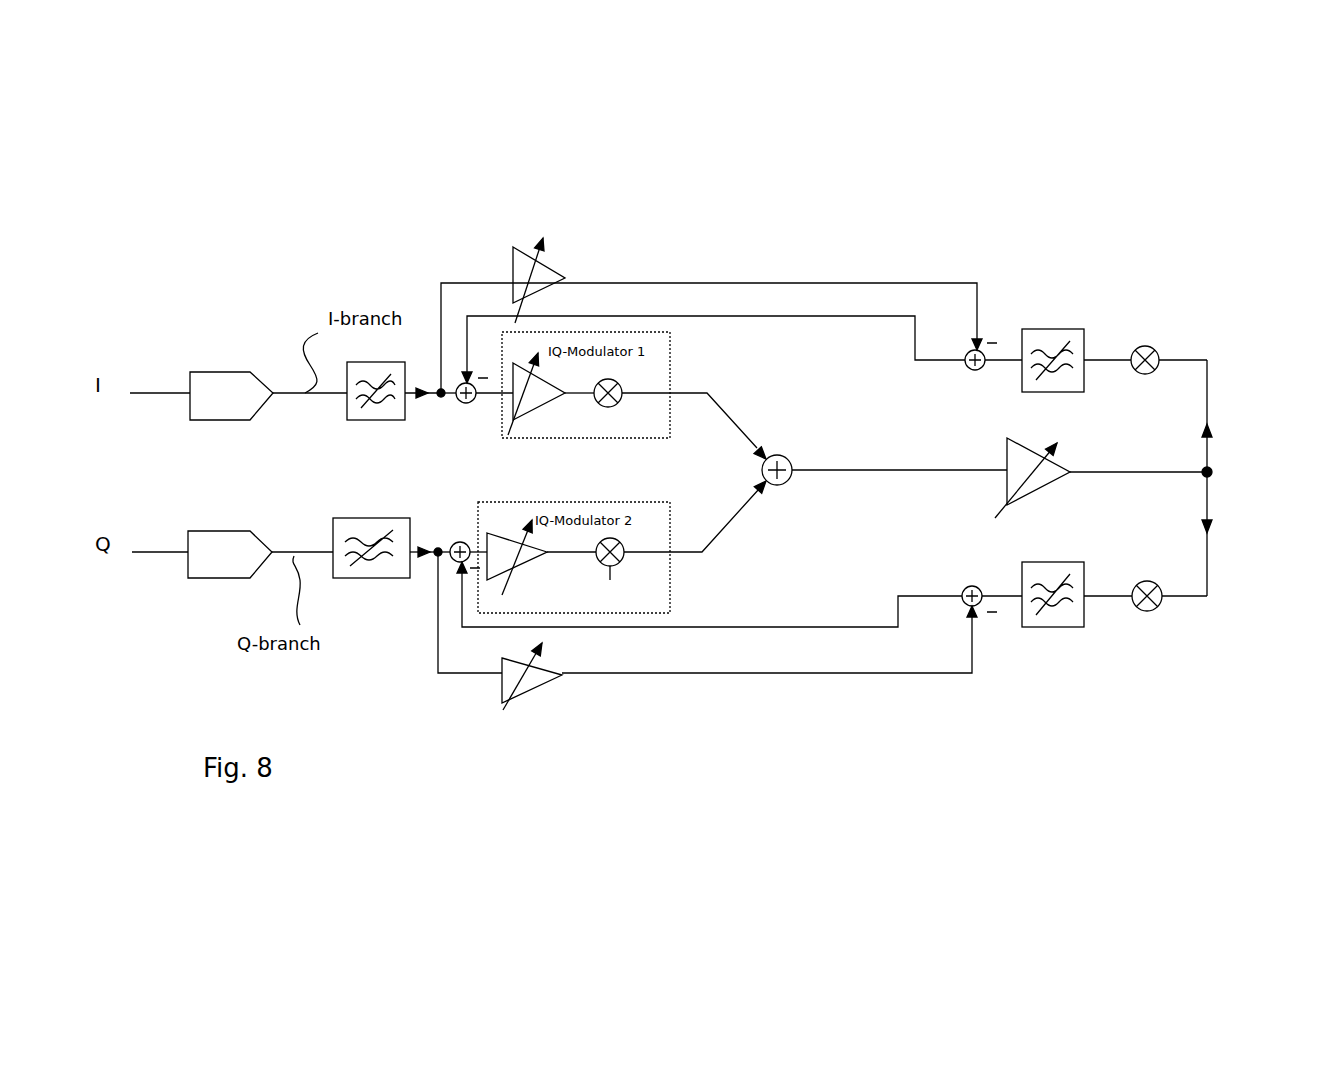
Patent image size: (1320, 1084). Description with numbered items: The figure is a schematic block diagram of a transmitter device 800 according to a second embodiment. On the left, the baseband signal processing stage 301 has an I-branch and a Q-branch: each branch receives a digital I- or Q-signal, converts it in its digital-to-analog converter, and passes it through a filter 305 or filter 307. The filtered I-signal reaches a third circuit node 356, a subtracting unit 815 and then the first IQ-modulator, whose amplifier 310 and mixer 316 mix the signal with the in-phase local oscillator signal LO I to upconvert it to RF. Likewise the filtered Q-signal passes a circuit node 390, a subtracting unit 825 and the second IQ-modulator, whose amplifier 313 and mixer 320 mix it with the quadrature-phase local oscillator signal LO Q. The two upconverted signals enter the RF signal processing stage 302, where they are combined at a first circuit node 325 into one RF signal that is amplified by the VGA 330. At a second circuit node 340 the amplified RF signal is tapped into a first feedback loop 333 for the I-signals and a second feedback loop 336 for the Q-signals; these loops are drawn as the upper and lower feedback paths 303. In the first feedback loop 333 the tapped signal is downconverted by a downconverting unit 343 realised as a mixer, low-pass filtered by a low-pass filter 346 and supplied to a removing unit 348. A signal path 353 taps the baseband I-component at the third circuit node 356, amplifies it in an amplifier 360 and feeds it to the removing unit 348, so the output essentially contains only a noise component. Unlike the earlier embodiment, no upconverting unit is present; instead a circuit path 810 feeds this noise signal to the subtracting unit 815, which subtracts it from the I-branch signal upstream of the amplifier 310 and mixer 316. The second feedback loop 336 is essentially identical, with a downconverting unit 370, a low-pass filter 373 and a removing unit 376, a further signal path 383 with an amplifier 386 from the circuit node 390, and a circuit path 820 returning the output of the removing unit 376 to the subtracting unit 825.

The transmitter device 800 is at (277, 250).
The baseband signal processing stage 301 is at (240, 472).
The filter 305 is at (370, 410).
The filter 307 is at (378, 527).
The subtracting unit 815 is at (442, 400).
The circuit node 390 is at (438, 560).
The third circuit node 356 is at (441, 393).
The subtracting unit 825 is at (438, 548).
The amplifier 310 is at (553, 395).
The amplifier 313 is at (530, 553).
The mixer 316 is at (622, 398).
The mixer 320 is at (624, 556).
The first circuit node 325 is at (760, 470).
The RF signal processing stage 302 is at (992, 455).
The VGA 330 is at (1035, 485).
The second circuit node 340 is at (1205, 470).
The first feedback loop 333 is at (1212, 465).
The second feedback loop 336 is at (1210, 500).
The signal path 353 is at (711, 324).
The amplifier 360 is at (553, 292).
The circuit path 810 is at (713, 347).
The removing unit 348 is at (970, 345).
The low-pass filter 346 is at (1070, 345).
The downconverting unit 343 is at (1160, 350).
The feedback loop 303 is at (1015, 283).
The circuit path 820 is at (709, 594).
The removing unit 376 is at (965, 590).
The low-pass filter 373 is at (1055, 612).
The downconverting unit 370 is at (1152, 612).
The further signal path 383 is at (707, 623).
The amplifier 386 is at (522, 688).